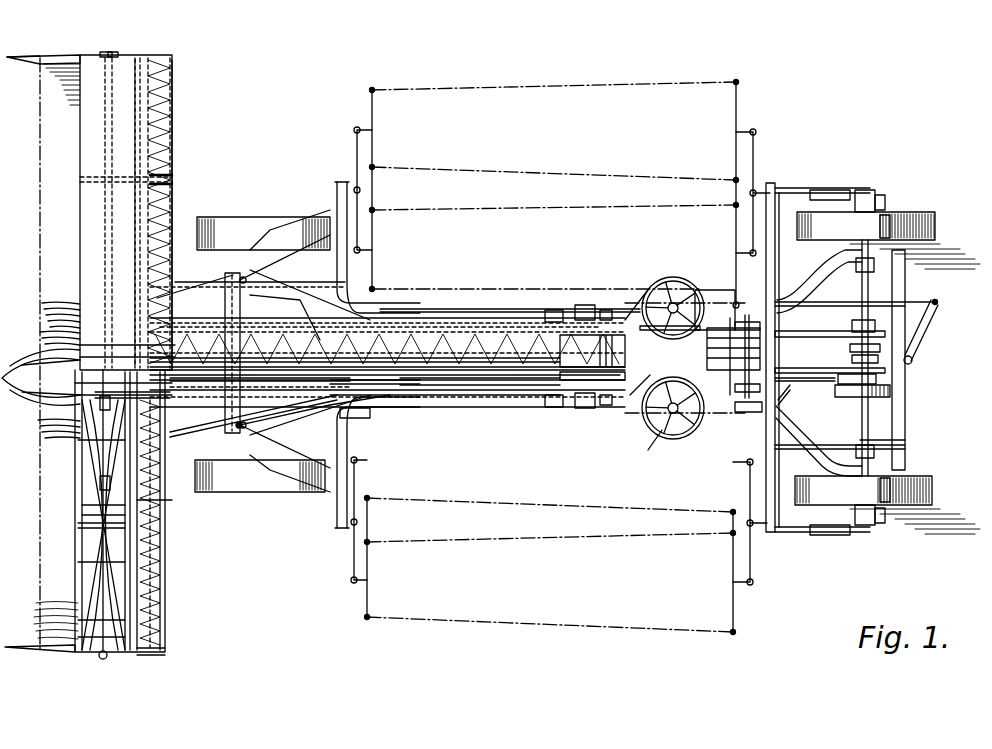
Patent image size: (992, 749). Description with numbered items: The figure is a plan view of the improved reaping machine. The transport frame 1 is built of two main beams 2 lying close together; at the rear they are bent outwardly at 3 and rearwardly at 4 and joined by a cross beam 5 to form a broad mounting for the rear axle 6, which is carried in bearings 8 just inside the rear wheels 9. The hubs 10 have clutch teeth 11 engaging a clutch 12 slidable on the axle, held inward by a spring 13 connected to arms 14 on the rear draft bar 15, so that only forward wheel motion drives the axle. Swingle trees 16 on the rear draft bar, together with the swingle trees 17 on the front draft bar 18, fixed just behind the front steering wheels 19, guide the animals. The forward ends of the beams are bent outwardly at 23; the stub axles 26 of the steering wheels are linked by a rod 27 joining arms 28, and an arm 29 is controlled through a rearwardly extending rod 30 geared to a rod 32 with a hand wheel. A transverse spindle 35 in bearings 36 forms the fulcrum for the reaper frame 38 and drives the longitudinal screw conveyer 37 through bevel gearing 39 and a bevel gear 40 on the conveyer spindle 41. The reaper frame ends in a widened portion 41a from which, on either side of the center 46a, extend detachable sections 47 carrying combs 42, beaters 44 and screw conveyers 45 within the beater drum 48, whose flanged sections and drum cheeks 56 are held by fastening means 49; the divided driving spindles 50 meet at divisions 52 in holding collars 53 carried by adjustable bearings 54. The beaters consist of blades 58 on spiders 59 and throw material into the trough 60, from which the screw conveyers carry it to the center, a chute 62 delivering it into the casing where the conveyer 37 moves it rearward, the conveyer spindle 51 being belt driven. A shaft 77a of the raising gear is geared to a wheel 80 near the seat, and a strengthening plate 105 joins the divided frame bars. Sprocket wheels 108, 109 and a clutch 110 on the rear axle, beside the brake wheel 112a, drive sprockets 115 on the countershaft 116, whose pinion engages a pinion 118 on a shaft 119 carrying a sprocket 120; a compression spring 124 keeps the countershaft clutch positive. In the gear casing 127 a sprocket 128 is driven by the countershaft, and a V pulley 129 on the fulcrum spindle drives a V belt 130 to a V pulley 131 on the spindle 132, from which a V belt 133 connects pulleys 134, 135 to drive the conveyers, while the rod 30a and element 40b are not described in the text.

The transport frame 1 is at (660, 470).
The main beams 2 is at (463, 318).
The outwardly bent portion of main beams 3 is at (805, 290).
The rearwardly bent portion of main beams 4 is at (868, 262).
The cross beam 5 is at (905, 410).
The main or rear axle 6 is at (925, 320).
The bearings 8 is at (890, 295).
The rear wheels 9 is at (920, 212).
The hubs 10 is at (885, 215).
The clutch teeth 11 is at (883, 200).
The clutch 12 is at (865, 190).
The spring 13 is at (830, 190).
The arms 14 is at (790, 190).
The rear draft bar 15 is at (775, 258).
The swingle trees 16 is at (730, 170).
The grain tank 17 is at (503, 90).
The front draft bar 18 is at (360, 190).
The front steering wheels 19 is at (245, 222).
The outwardly bent forward ends of frame members 23 is at (380, 300).
The stub axles 26 is at (241, 275).
The rod 27 is at (300, 420).
The arm 28 is at (285, 232).
The arm 29 is at (238, 428).
The rearwardly extending rod 30 is at (445, 375).
The sprocket wheel 30a is at (655, 420).
The rod 32 is at (648, 450).
The transverse spindle 35 is at (585, 305).
The bearings 36 is at (555, 310).
The longitudinal screw conveyer 37 is at (415, 330).
The reaper frame 38 is at (497, 340).
The bevel gearing 39 is at (608, 310).
The bevel gear 40 is at (28, 52).
The rod 40b is at (520, 370).
The spindle of the conveyer 41 is at (440, 322).
The widened portion 41a is at (176, 268).
The combs 42 is at (58, 655).
The beaters 44 is at (95, 478).
The screw conveyers 45 is at (172, 148).
The center 46a is at (30, 400).
The detachable units or sections 47 is at (172, 112).
The beater frame or drum 48 is at (118, 98).
The fastening means 49 is at (100, 548).
The driving spindles 50 is at (118, 52).
The conveyer spindle 51 is at (165, 625).
The division 52 is at (170, 540).
The holding collars or sleeves 53 is at (100, 505).
The adjustable bearing 54 is at (105, 52).
The drum cheeks or flanges 56 is at (96, 522).
The blades 58 is at (108, 440).
The spiders 59 is at (165, 505).
The trough or casing 60 is at (166, 652).
The throat or chute 62 is at (190, 435).
The shaft 77a is at (641, 290).
The wheel 80 is at (705, 290).
The strengthening plate 105 is at (660, 300).
The sprocket wheel 108 is at (838, 380).
The sprocket wheel 109 is at (672, 330).
The clutch 110 is at (852, 350).
The brake wheel 112a is at (890, 380).
The sprockets 115 is at (728, 318).
The countershaft 116 is at (752, 292).
The pinion 118 is at (790, 378).
The shaft 119 is at (790, 358).
The sprocket 120 is at (748, 412).
The compression spring 124 is at (712, 340).
The gear casing 127 is at (425, 375).
The sprocket 128 is at (600, 385).
The V pulley 129 is at (568, 380).
The V belt 130 is at (525, 372).
The V pulley 131 is at (455, 392).
The spindle 132 is at (360, 418).
The V belt 133 is at (226, 300).
The pulley 134 is at (285, 325).
The pulley 135 is at (190, 300).